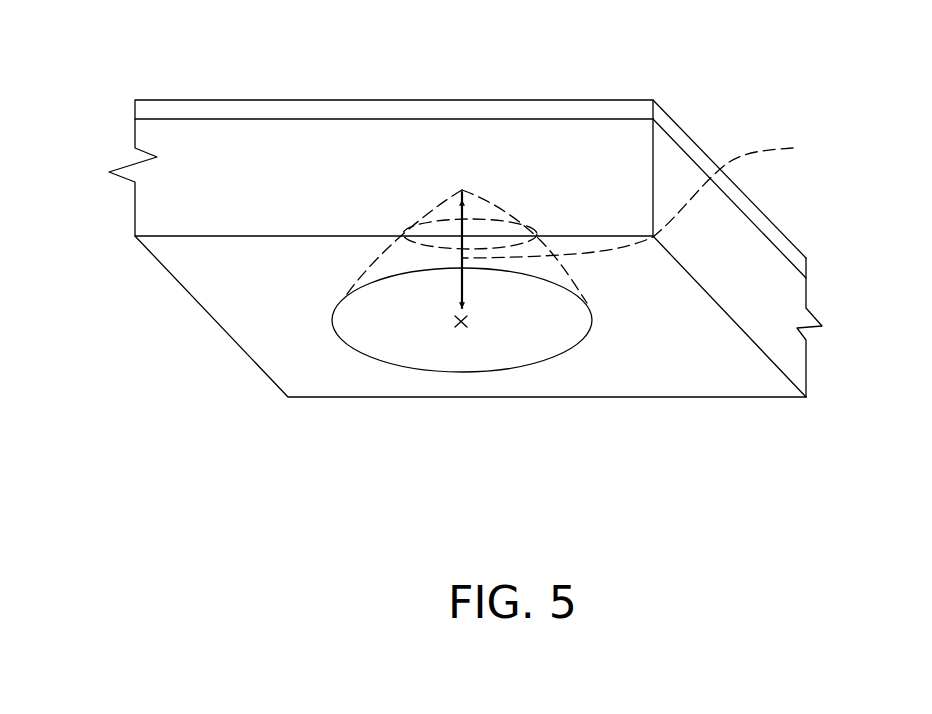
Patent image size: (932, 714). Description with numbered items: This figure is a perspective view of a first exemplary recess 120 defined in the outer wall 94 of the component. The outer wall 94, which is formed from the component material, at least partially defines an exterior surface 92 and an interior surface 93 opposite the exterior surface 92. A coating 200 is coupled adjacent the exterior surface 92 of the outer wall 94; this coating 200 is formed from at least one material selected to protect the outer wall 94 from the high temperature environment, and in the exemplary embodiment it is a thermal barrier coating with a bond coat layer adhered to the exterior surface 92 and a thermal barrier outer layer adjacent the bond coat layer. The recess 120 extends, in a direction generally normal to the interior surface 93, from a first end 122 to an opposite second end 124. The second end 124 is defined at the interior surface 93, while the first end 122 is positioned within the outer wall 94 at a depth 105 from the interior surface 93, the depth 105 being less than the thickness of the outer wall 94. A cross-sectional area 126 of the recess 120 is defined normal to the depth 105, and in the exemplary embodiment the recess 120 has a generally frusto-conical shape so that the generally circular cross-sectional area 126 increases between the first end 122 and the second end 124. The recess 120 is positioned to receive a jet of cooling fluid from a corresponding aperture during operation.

The exterior surface 92 is at (480, 118).
The interior surface 93 is at (672, 382).
The outer wall 94 is at (760, 299).
The depth 105 is at (655, 196).
The recess 120 is at (491, 338).
The first end 122 is at (443, 183).
The second end 124 is at (325, 336).
The cross-sectional area 126 is at (415, 250).
The coating 200 is at (393, 99).